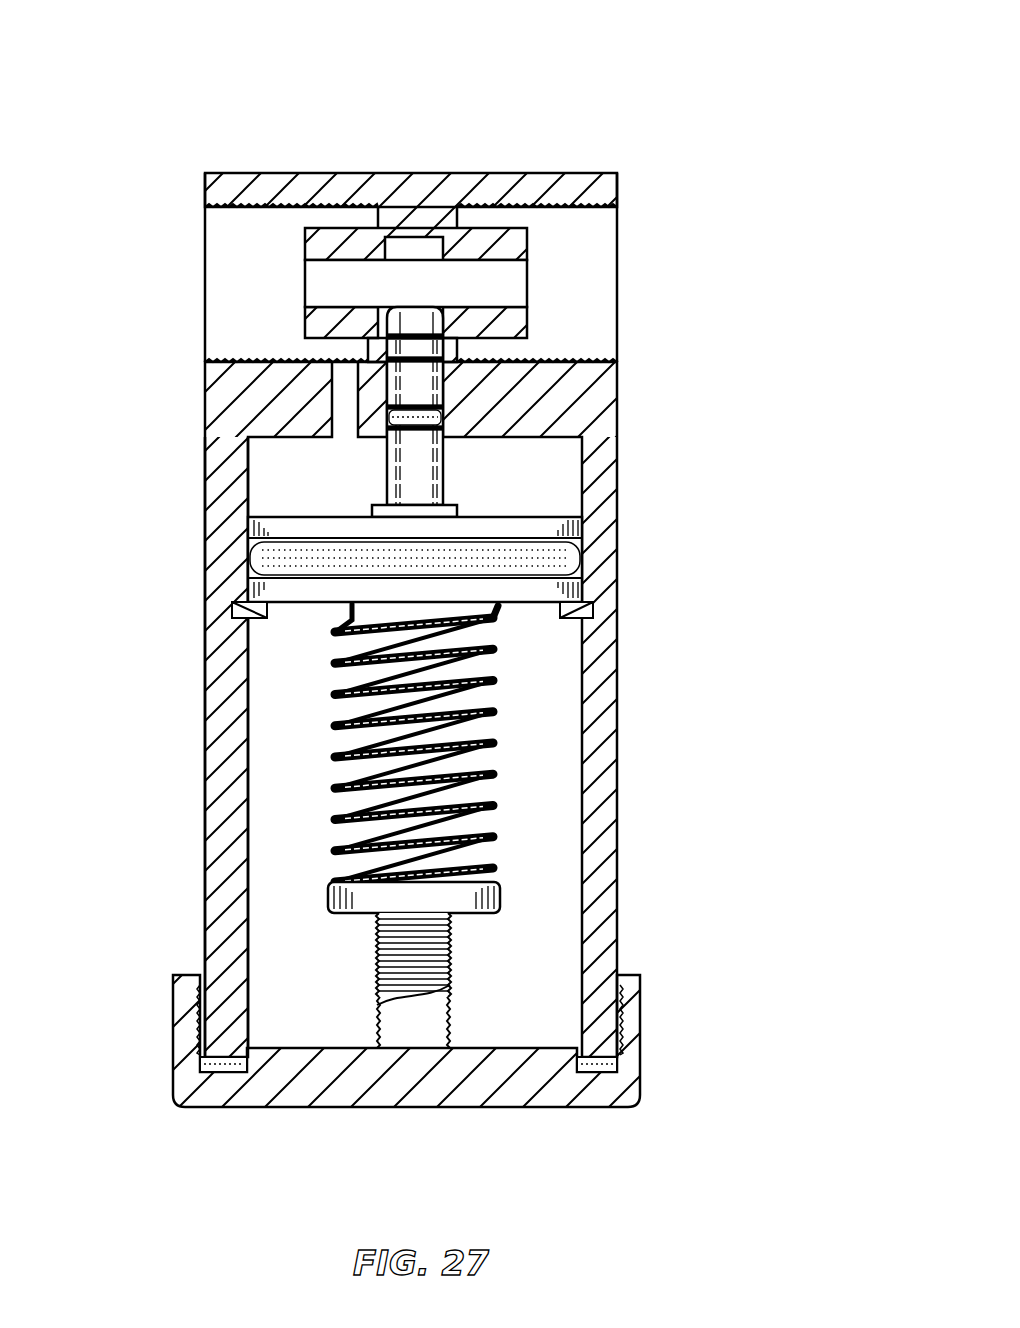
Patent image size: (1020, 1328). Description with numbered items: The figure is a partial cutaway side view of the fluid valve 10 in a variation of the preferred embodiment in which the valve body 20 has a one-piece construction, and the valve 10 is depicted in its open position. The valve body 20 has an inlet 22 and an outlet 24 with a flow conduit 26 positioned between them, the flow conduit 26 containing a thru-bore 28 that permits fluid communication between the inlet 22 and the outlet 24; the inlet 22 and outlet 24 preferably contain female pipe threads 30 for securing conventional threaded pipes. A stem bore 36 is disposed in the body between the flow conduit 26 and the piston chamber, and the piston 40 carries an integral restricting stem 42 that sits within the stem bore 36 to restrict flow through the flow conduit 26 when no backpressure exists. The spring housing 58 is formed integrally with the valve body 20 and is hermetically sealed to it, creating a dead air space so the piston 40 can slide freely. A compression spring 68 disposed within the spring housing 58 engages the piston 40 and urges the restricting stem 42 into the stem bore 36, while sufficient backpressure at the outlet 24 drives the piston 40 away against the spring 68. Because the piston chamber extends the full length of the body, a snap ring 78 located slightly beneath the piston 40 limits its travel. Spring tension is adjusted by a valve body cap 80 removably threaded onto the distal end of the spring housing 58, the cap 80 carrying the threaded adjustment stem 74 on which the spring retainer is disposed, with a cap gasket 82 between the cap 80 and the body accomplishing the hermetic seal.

The fluid valve 10 is at (650, 693).
The valve body 20 is at (418, 172).
The inlet 22 is at (618, 304).
The outlet 24 is at (205, 280).
The flow conduit 26 is at (322, 230).
The thru-bore 28 is at (482, 262).
The female pipe threads 30 is at (618, 355).
The stem bore 36 is at (456, 226).
The piston 40 is at (297, 513).
The restricting stem 42 is at (443, 477).
The spring housing 58 is at (203, 817).
The compression spring 68 is at (493, 860).
The adjustment stem 74 is at (450, 1010).
The snap ring 78 is at (230, 610).
The valve body cap 80 is at (173, 1052).
The cap gasket 82 is at (603, 1075).